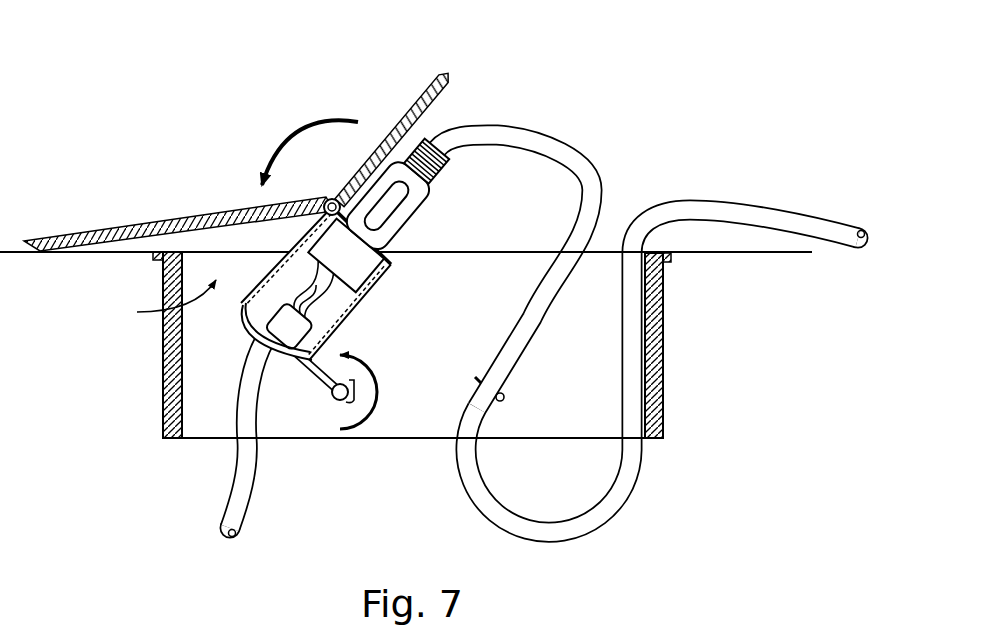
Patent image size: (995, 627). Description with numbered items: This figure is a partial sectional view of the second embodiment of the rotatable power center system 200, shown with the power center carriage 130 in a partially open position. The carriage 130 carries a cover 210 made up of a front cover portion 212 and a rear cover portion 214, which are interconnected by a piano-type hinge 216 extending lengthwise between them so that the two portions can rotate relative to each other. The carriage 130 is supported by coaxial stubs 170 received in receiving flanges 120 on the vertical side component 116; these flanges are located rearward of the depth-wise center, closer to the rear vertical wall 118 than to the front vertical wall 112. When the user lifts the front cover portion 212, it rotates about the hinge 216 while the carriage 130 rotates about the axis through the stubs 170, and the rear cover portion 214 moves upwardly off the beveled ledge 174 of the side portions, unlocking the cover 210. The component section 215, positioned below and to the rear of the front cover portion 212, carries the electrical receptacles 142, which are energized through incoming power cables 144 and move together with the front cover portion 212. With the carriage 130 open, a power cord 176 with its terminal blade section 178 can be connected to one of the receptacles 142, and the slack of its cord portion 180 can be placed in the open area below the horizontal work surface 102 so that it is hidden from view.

The work surface 102 is at (765, 247).
The front vertical wall 112 is at (663, 350).
The vertical side component 116 is at (405, 425).
The rear vertical wall 118 is at (163, 405).
The receiving flange 120 is at (318, 402).
The power center carriage 130 is at (274, 188).
The electrical receptacle 142 is at (357, 267).
The incoming power cable 144 is at (243, 520).
The coaxial stub 170 is at (352, 405).
The beveled ledge 174 is at (180, 252).
The power cord 176 is at (682, 162).
The terminal blade section 178 is at (407, 226).
The cord portion 180 is at (627, 465).
The power center system 200 is at (548, 108).
The cover 210 is at (247, 172).
The front cover portion 212 is at (381, 142).
The rear cover portion 214 is at (98, 230).
The component section 215 is at (152, 303).
The piano-type hinge 216 is at (326, 200).